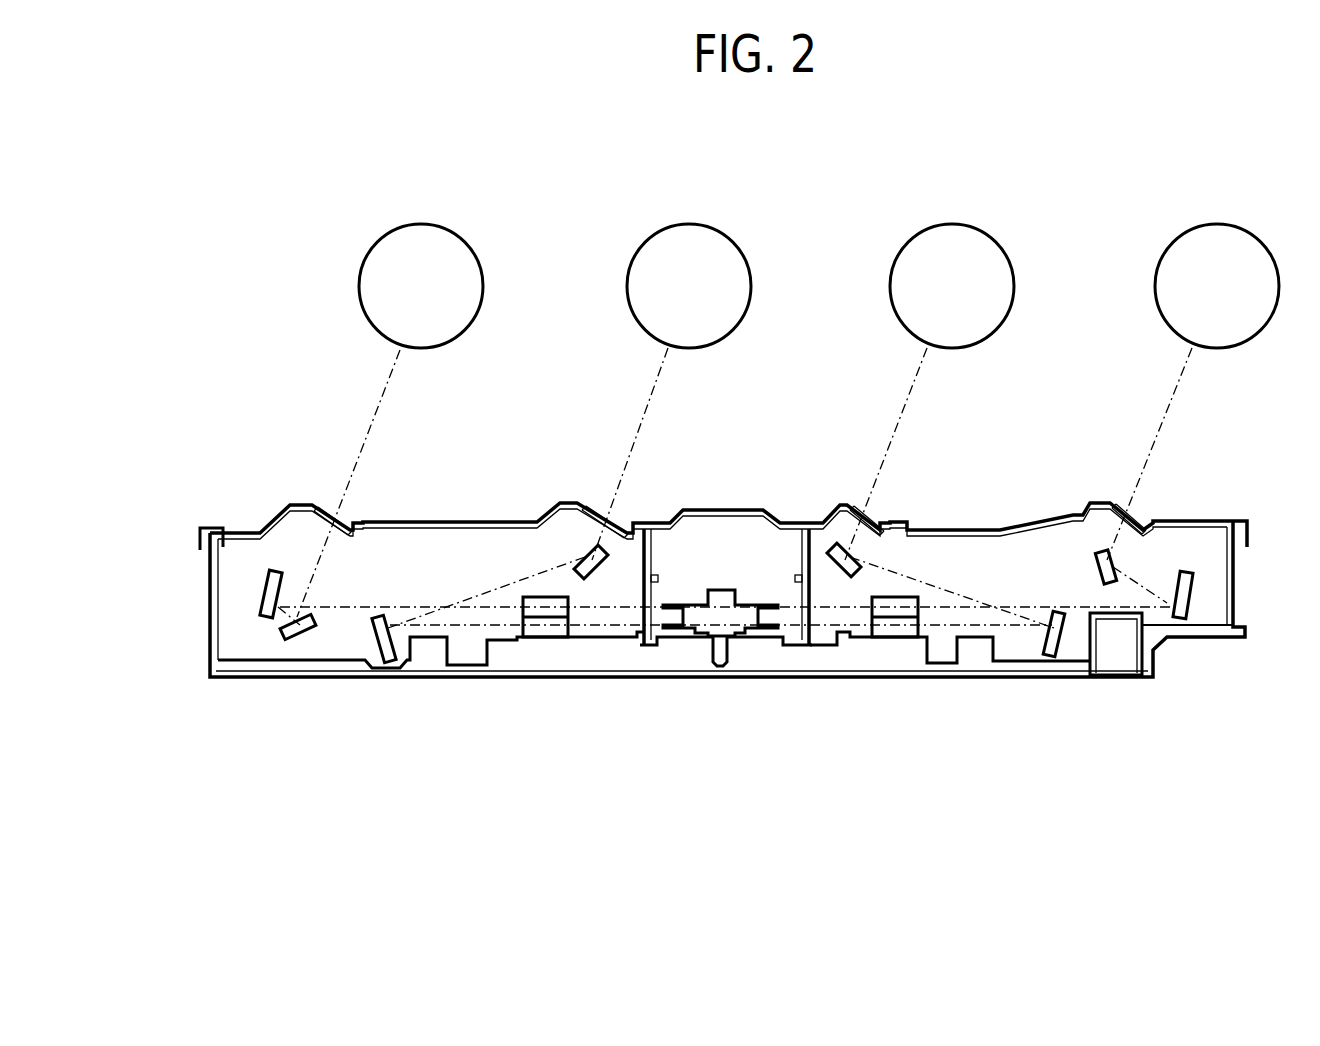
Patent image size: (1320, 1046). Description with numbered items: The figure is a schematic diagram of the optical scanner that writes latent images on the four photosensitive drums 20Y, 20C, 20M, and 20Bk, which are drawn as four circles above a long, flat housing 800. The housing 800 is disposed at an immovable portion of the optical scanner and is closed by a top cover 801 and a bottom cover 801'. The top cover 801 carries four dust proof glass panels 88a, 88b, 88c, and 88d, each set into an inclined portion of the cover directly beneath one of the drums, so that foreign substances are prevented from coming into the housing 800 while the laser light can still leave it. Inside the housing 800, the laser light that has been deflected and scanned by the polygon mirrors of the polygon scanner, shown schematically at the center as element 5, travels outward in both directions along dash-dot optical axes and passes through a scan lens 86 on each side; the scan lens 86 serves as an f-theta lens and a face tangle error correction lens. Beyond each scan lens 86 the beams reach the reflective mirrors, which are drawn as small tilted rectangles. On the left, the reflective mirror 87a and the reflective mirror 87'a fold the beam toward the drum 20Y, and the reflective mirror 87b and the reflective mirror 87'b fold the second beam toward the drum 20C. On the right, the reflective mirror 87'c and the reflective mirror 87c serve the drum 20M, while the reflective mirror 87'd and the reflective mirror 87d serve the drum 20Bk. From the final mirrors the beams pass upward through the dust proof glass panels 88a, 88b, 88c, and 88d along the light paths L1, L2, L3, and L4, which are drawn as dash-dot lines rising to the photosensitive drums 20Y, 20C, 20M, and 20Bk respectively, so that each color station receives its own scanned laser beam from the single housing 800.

The photosensitive drum 20Y is at (455, 243).
The photosensitive drum 20C is at (720, 243).
The photosensitive drum 20M is at (983, 243).
The photosensitive drum 20Bk is at (1246, 243).
The light path L1 is at (362, 430).
The light path L2 is at (628, 430).
The light path L3 is at (891, 430).
The light path L4 is at (1156, 430).
The dust proof glass panel 88a is at (330, 512).
The dust proof glass panel 88b is at (596, 512).
The dust proof glass panel 88c is at (862, 512).
The dust proof glass panel 88d is at (1124, 510).
The reflective mirror 87a is at (270, 585).
The reflective mirror 87'a is at (304, 668).
The reflective mirror 87b is at (388, 660).
The reflective mirror 87'b is at (601, 574).
The reflective mirror 87'c is at (838, 573).
The reflective mirror 87c is at (1050, 657).
The reflective mirror 87'd is at (1076, 571).
The reflective mirror 87d is at (1200, 557).
The scan lens 86 is at (520, 612).
The polygon mirror deflector 5 is at (722, 590).
The housing 800 is at (1236, 603).
The top cover 801 is at (761, 524).
The bottom cover 801' is at (1125, 673).